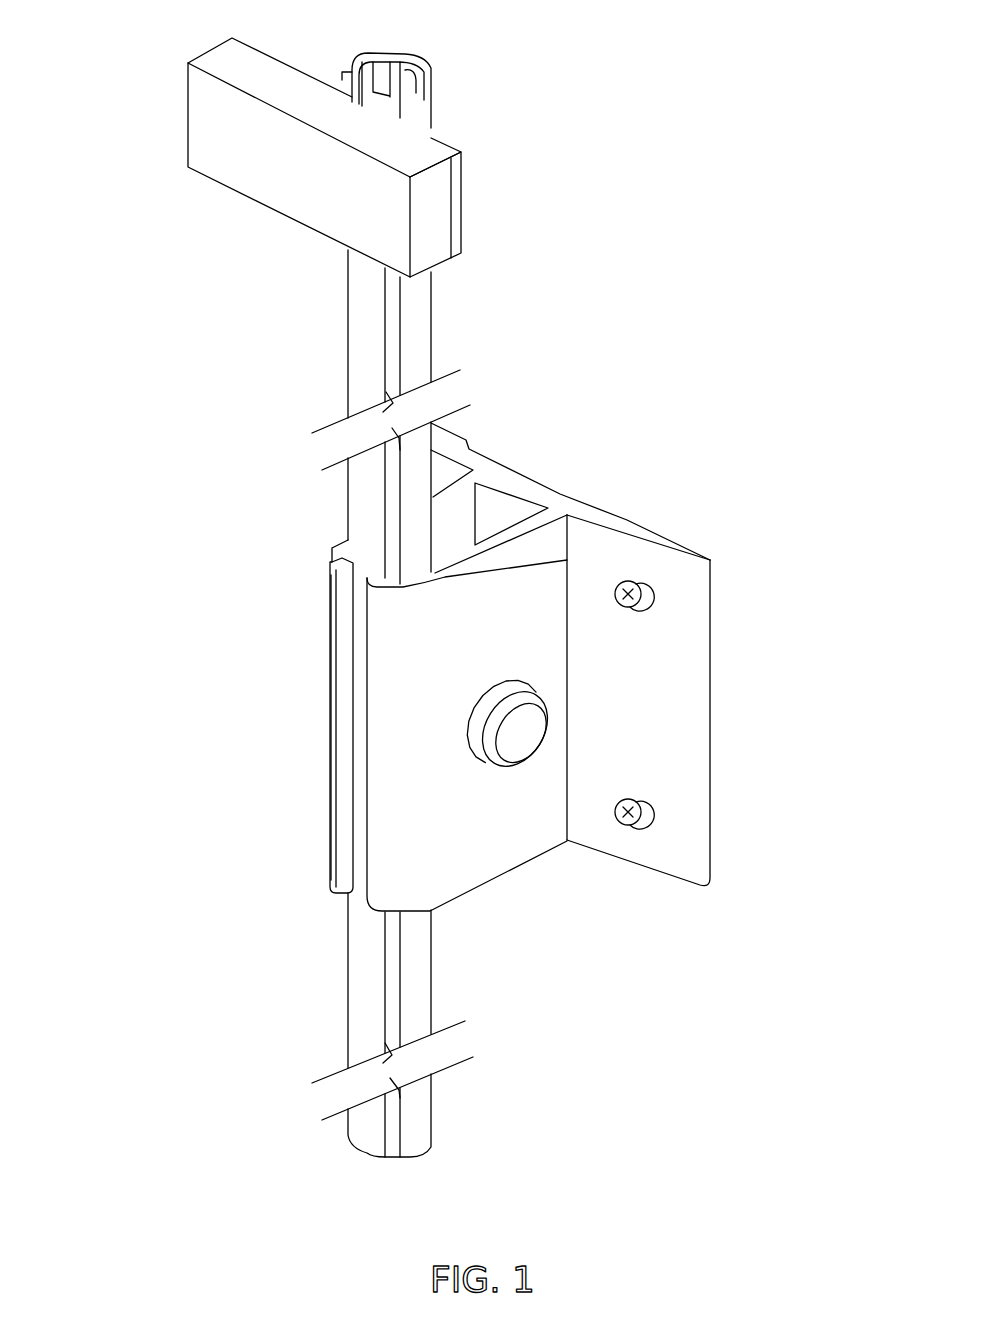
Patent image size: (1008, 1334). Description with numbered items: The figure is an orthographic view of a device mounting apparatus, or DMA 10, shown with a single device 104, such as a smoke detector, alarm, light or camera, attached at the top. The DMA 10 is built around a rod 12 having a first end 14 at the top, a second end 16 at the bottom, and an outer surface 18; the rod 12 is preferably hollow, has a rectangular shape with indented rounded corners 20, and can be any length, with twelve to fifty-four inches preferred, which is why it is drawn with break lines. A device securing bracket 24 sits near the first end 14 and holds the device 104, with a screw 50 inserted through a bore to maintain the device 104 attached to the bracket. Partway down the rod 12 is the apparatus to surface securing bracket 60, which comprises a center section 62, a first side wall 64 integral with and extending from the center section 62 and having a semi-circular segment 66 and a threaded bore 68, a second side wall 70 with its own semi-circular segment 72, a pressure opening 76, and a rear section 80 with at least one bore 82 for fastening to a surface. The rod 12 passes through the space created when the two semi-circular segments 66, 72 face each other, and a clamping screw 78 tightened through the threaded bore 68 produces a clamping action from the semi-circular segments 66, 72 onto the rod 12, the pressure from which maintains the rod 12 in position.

The device mounting apparatus 10 is at (122, 73).
The rod 12 is at (468, 417).
The first end 14 is at (408, 63).
The second end 16 is at (368, 1153).
The outer surface 18 is at (430, 292).
The indented rounded corners 20 is at (393, 975).
The device securing bracket 24 is at (469, 635).
The screw 50 is at (653, 823).
The apparatus to surface securing bracket 60 is at (508, 663).
The center section 62 is at (508, 745).
The first side wall 64 is at (475, 858).
The semi-circular segment 66 is at (590, 550).
The threaded bore 68 is at (478, 688).
The second side wall 70 is at (330, 546).
The semi-circular segment 72 is at (332, 565).
The pressure opening 76 is at (470, 527).
The clamping screw 78 is at (522, 735).
The rear section 80 is at (533, 497).
The bore 82 is at (650, 595).
The device 104 is at (325, 203).